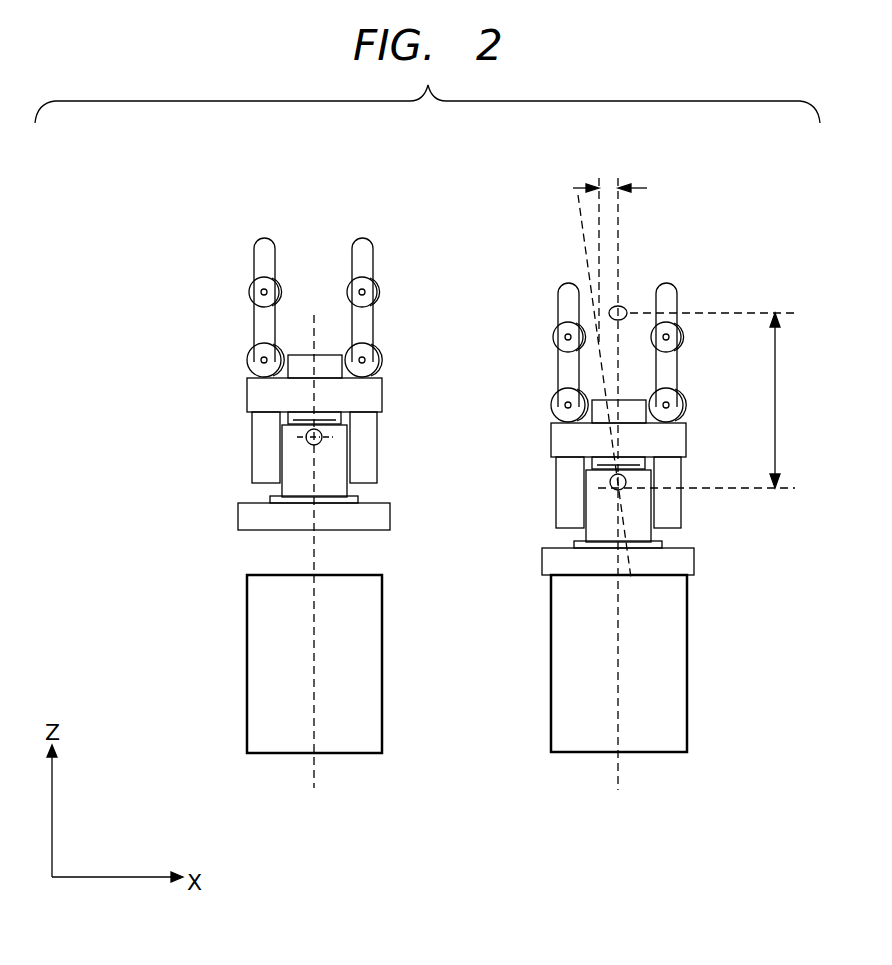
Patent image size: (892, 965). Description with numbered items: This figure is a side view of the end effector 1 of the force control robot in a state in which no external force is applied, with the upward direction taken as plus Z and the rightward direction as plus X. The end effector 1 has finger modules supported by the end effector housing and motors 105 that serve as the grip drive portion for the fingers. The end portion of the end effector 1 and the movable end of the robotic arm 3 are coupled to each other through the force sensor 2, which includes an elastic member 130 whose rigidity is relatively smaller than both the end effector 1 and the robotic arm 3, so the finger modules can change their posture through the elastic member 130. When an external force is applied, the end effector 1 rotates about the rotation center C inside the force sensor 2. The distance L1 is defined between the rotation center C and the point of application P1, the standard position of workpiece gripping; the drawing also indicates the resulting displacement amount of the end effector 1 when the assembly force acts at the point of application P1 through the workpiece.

The end effector 1 is at (206, 228).
The force sensor 2 is at (290, 482).
The robotic arm 3 is at (206, 567).
The motors 105 is at (267, 465).
The elastic member 130 is at (338, 487).
The rotation center C is at (323, 434).
The point of application P1 is at (628, 300).
The distance L1 is at (703, 400).